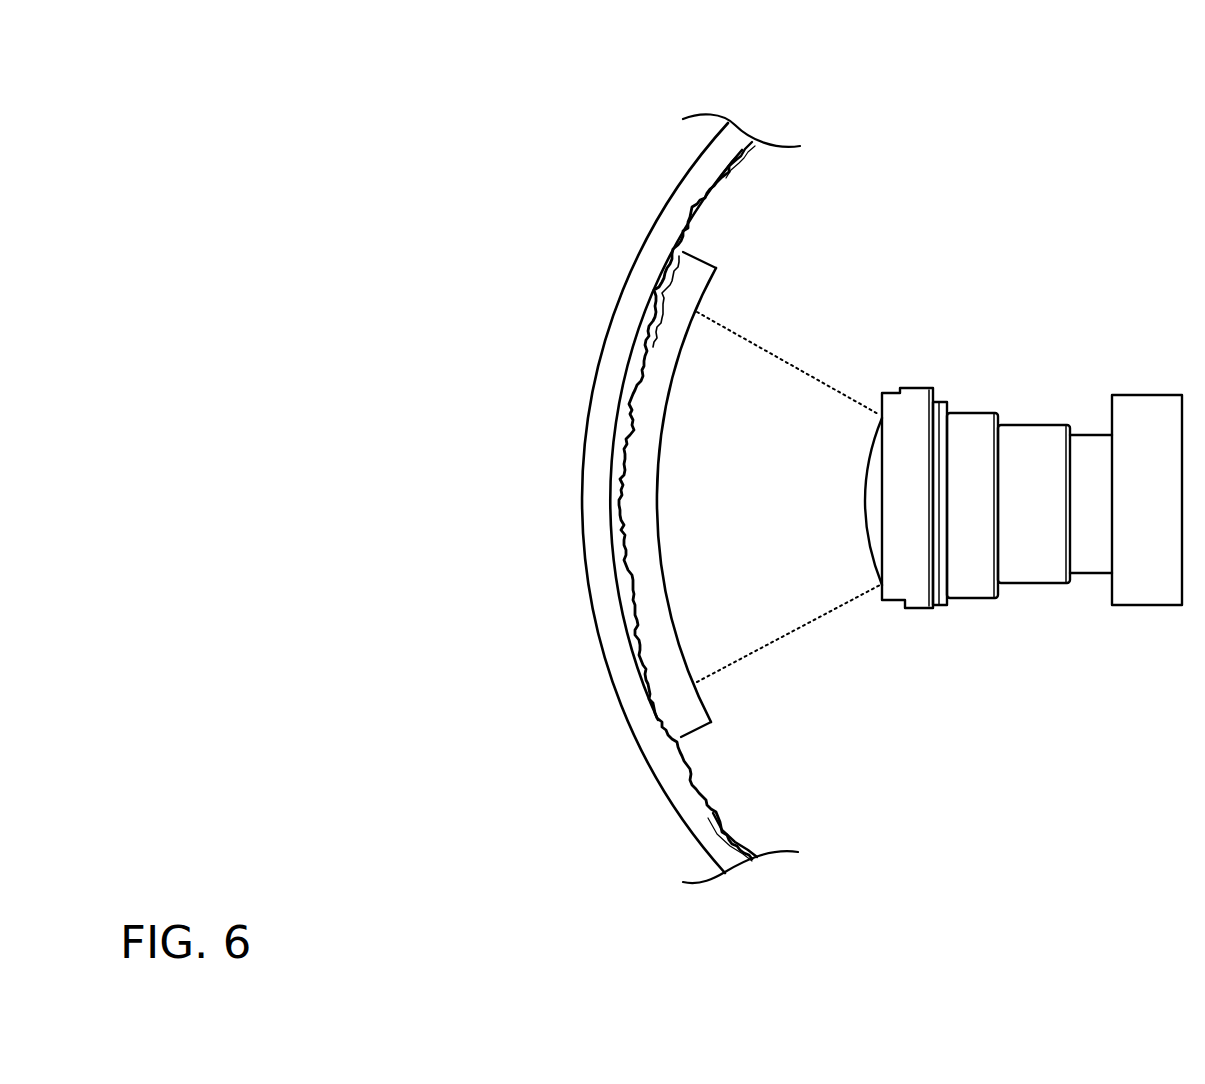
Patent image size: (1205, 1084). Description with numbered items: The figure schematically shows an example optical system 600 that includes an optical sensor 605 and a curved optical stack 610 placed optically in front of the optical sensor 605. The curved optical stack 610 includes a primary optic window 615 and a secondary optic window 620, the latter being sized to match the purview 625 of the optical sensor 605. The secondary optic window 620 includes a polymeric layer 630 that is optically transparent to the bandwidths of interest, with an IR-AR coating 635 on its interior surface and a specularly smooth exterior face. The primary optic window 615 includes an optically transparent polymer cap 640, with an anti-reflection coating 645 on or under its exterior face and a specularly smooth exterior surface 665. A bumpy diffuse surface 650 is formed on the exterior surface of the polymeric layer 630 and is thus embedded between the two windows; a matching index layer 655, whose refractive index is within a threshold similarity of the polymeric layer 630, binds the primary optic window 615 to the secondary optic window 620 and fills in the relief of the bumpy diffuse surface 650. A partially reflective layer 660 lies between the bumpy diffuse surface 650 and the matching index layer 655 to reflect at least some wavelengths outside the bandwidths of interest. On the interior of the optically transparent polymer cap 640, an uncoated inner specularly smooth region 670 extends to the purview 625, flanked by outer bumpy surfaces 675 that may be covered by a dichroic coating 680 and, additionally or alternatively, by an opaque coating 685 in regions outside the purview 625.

The optical system 600 is at (1058, 159).
The optical sensor 605 is at (1068, 355).
The curved optical stack 610 is at (689, 71).
The primary optic window 615 is at (657, 207).
The secondary optic window 620 is at (707, 254).
The purview 625 is at (753, 372).
The polymeric layer 630 is at (655, 400).
The IR-AR coating 635 is at (658, 530).
The optically transparent polymer cap 640 is at (738, 140).
The anti-reflection coating 645 is at (587, 593).
The bumpy diffuse surface 650 is at (634, 443).
The matching index layer 655 is at (623, 510).
The partially reflective layer 660 is at (628, 397).
The specularly smooth exterior surface 665 is at (624, 286).
The inner specularly smooth region 670 is at (623, 361).
The outer bumpy surfaces 675 is at (719, 166).
The dichroic coating 680 is at (723, 177).
The opaque coating 685 is at (743, 130).